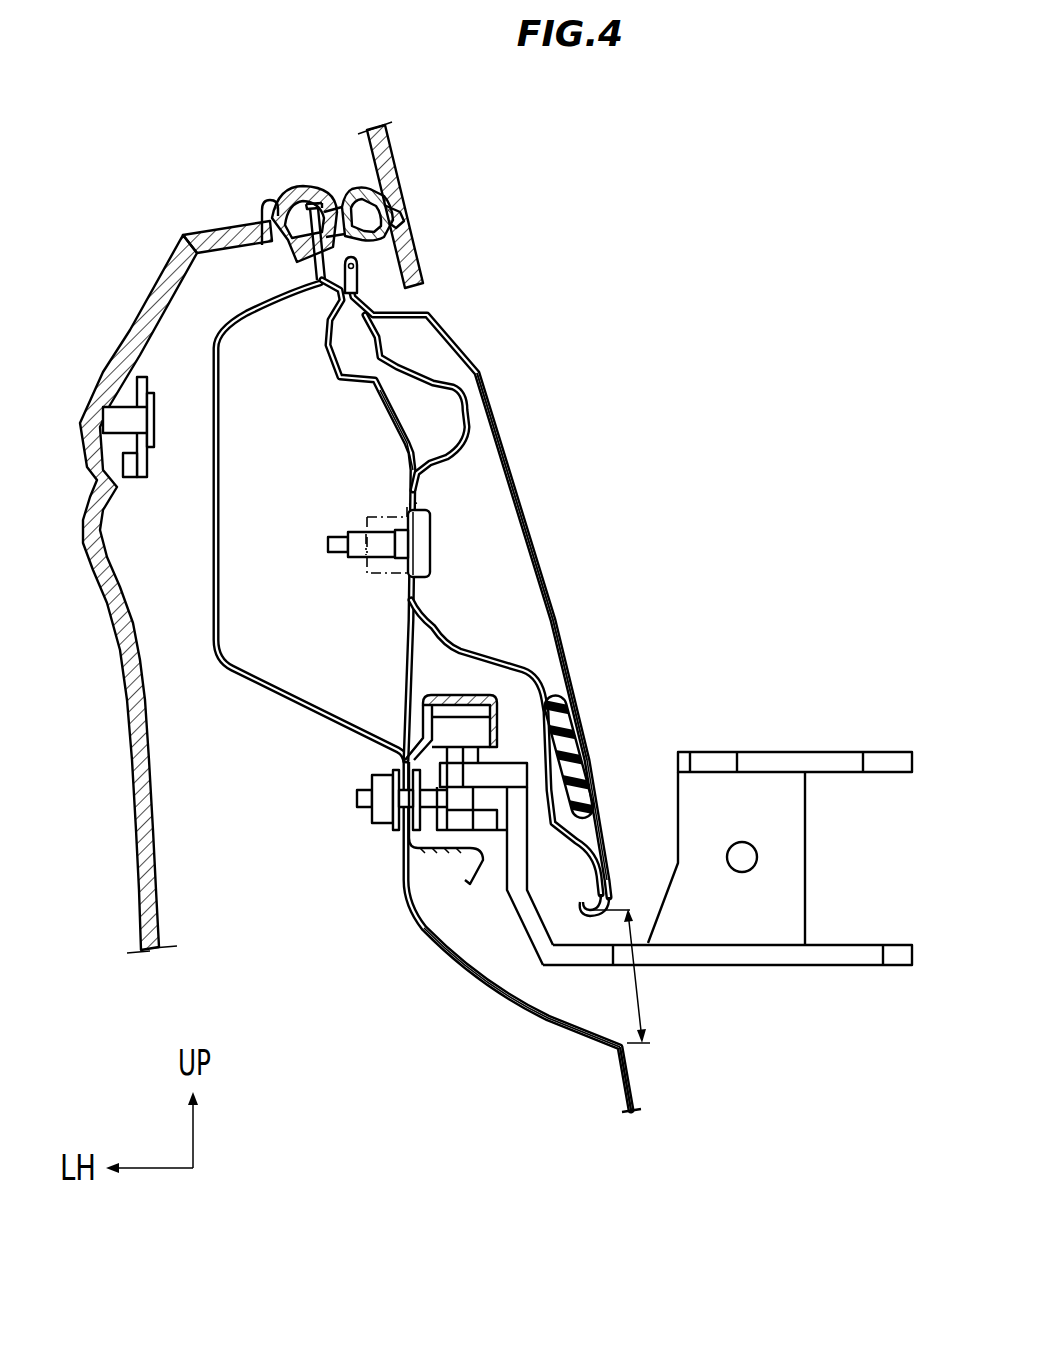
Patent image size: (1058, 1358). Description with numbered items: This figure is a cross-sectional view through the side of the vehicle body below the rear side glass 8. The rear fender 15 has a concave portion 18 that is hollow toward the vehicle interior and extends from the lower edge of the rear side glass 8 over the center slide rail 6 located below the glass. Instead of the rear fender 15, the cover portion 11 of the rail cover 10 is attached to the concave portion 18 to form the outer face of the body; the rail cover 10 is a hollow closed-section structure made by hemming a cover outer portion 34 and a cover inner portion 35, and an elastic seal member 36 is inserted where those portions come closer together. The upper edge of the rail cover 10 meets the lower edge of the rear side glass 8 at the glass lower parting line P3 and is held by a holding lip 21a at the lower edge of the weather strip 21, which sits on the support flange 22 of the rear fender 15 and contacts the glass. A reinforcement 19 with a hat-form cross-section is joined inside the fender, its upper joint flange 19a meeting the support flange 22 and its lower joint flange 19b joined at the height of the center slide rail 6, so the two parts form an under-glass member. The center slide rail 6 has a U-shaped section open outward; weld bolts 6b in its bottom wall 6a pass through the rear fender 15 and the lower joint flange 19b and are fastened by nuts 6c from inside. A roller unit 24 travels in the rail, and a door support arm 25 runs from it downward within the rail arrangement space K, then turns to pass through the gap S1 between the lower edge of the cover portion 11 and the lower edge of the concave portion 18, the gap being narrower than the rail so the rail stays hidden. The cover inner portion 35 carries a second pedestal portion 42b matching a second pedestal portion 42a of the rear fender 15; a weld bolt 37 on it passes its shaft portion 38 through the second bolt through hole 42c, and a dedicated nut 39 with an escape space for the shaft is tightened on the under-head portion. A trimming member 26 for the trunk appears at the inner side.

The center slide rail 6 is at (471, 688).
The bottom wall 6a is at (424, 735).
The weld bolts 6b is at (357, 797).
The nuts 6c is at (377, 768).
The rear side glass 8 is at (402, 178).
The rail cover 10 is at (532, 566).
The cover portion 11 is at (530, 503).
The rear fender 15 is at (633, 1090).
The concave portion 18 is at (537, 990).
The reinforcement 19 is at (258, 692).
The upper joint flange 19a is at (270, 210).
The lower joint flange 19b is at (400, 847).
The weather strip 21 is at (353, 180).
The holding lip 21a is at (362, 270).
The support flange 22 is at (314, 204).
The roller unit 24 is at (517, 763).
The door support arm 25 is at (537, 910).
The trimming member 26 is at (125, 728).
The cover outer portion 34 is at (542, 577).
The cover inner portion 35 is at (506, 755).
The elastic seal member 36 is at (582, 747).
The weld bolt 37 is at (337, 533).
The shaft portion 38 is at (403, 567).
The dedicated nut 39 is at (365, 568).
The second pedestal portion 42a is at (413, 457).
The second pedestal portion 42b is at (440, 456).
The second bolt through hole 42c is at (418, 533).
The rail arrangement space K is at (500, 939).
The gap S1 is at (643, 997).
The glass lower parting line P3 is at (403, 302).